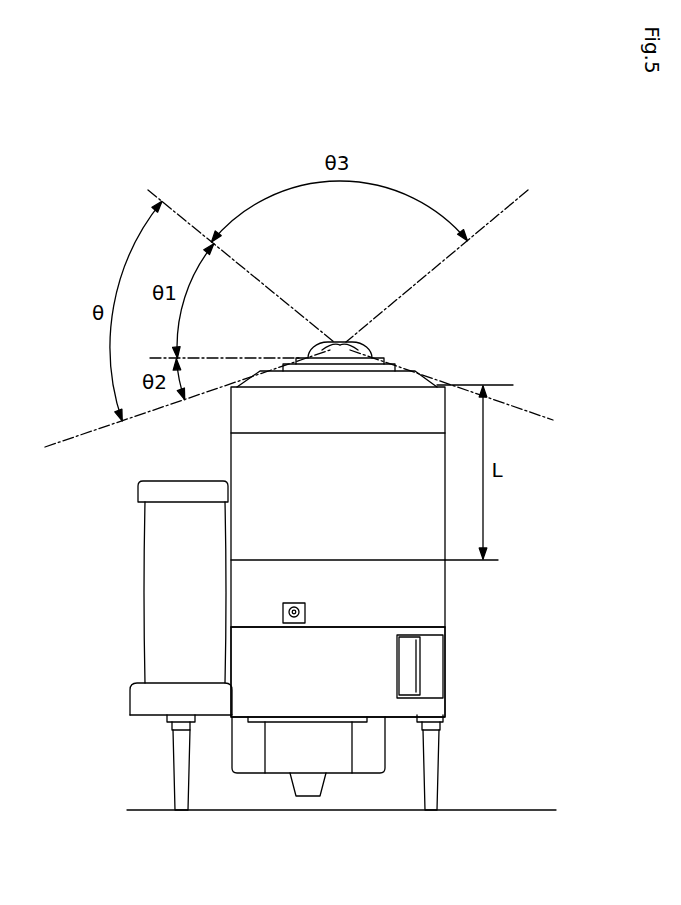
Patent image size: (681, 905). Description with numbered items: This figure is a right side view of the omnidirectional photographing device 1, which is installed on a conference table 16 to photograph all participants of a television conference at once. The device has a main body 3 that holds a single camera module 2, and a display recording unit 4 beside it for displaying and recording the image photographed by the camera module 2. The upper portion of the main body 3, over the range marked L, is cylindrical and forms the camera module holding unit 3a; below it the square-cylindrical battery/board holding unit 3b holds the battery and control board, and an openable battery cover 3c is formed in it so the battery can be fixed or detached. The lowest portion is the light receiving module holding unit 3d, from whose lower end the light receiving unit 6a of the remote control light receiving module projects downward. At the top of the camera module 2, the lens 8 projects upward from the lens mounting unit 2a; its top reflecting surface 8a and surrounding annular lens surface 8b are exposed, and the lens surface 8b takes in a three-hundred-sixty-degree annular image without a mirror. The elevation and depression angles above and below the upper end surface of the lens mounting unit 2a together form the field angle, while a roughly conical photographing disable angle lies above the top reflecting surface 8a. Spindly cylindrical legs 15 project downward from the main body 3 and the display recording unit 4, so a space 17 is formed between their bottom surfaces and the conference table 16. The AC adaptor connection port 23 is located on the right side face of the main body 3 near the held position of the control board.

The omnidirectional photographing device 1 is at (430, 186).
The camera module 2 is at (392, 367).
The lens mounting unit 2a is at (368, 360).
The main body 3 is at (299, 552).
The camera module holding unit 3a is at (253, 455).
The battery/board holding unit 3b is at (238, 650).
The battery cover 3c is at (440, 674).
The light receiving module holding unit 3d is at (250, 758).
The display recording unit 4 is at (172, 564).
The light receiving unit 6a is at (307, 793).
The lens 8 is at (315, 278).
The top reflecting surface 8a is at (348, 343).
The lens surface 8b is at (333, 343).
The leg 15 is at (174, 762).
The conference table 16 is at (418, 854).
The space 17 is at (382, 794).
The AC adaptor connection port 23 is at (306, 608).